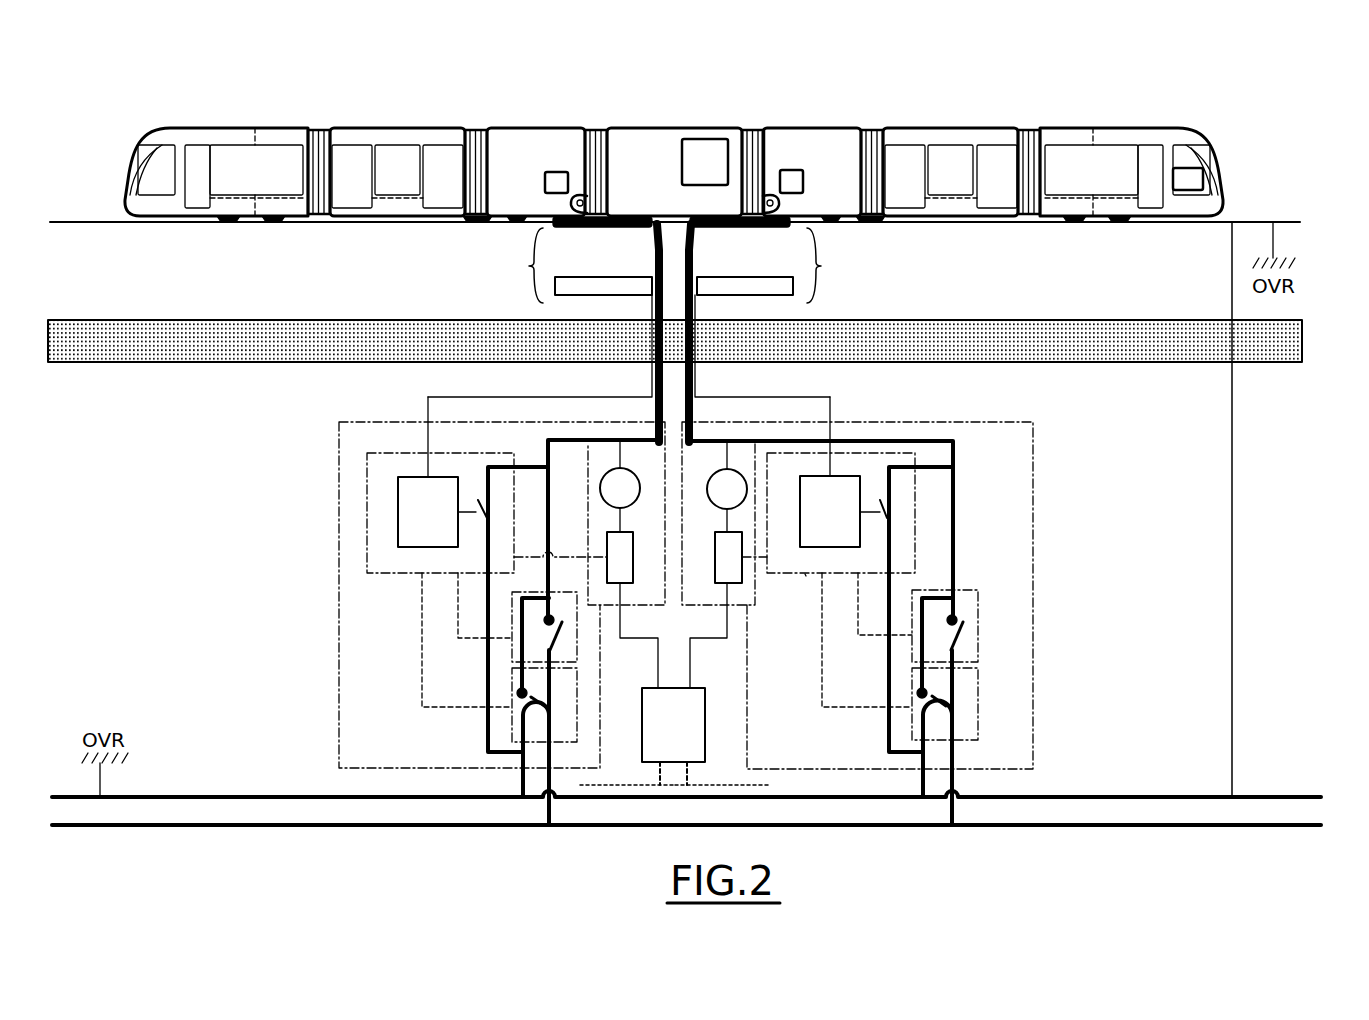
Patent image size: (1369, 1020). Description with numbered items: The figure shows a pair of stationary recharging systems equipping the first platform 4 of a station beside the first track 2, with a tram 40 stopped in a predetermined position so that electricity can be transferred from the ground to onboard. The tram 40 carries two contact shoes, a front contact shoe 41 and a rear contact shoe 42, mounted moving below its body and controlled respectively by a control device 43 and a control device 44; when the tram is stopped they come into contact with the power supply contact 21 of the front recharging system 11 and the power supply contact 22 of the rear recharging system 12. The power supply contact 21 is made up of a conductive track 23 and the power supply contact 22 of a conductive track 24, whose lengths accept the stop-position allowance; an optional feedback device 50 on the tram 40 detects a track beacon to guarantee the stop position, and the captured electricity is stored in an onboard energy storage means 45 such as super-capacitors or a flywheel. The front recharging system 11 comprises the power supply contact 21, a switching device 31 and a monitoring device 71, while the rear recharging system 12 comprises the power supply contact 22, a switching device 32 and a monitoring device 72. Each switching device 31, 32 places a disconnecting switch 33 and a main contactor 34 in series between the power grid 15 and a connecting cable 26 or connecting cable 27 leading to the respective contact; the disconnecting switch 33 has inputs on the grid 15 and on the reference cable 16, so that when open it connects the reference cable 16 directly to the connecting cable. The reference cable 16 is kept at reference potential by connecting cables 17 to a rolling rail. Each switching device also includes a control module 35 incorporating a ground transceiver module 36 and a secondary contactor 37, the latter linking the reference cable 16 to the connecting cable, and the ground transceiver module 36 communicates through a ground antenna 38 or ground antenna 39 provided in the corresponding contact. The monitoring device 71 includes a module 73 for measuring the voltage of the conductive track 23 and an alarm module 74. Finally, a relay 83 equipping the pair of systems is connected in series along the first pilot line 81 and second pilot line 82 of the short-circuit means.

The first track 2 is at (1292, 216).
The first platform 4 is at (1281, 362).
The front recharging system 11 is at (1077, 486).
The rear recharging system 12 is at (306, 480).
The power grid 15 is at (1293, 827).
The reference cable 16 is at (1293, 797).
The connecting cable 17 is at (1233, 565).
The power supply contact 21 is at (830, 265).
The power supply contact 22 is at (523, 265).
The conductive track 23 is at (757, 231).
The conductive track 24 is at (588, 231).
The connecting cable 26 is at (706, 418).
The connecting cable 27 is at (566, 444).
The switching device 31 is at (1040, 658).
The switching device 32 is at (334, 660).
The disconnecting switch 33 is at (512, 725).
The main contactor 34 is at (512, 652).
The control module 35 is at (805, 574).
The ground transceiver module 36 is at (655, 552).
The secondary contactor 37 is at (490, 508).
The ground antenna 38 is at (747, 295).
The ground antenna 39 is at (590, 295).
The tram 40 is at (503, 111).
The front contact shoe 41 is at (770, 196).
The rear contact shoe 42 is at (580, 192).
The control device 43 is at (793, 170).
The control device 44 is at (556, 172).
The energy storage means 45 is at (707, 150).
The feedback device 50 is at (1193, 178).
The monitoring device 71 is at (705, 622).
The monitoring device 72 is at (643, 622).
The voltage measuring module 73 is at (631, 506).
The alarm module 74 is at (633, 560).
The first pilot line 81 is at (625, 790).
The second pilot line 82 is at (722, 773).
The relay 83 is at (673, 725).